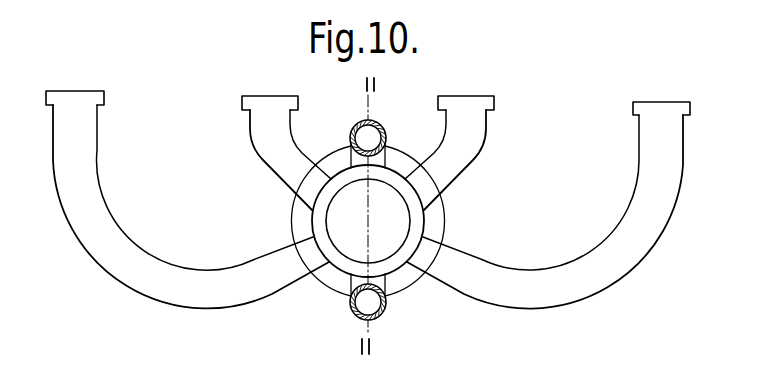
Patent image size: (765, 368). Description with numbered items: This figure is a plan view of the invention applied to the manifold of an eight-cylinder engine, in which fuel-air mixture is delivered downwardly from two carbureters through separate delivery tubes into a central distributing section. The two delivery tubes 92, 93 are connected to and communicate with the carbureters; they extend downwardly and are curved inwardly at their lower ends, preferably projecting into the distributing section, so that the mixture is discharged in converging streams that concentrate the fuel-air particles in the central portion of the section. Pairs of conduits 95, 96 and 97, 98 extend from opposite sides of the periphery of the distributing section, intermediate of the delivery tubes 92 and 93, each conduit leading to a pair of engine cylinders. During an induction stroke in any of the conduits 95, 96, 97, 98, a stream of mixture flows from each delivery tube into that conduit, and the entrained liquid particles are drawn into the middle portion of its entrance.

The delivery tube 92 is at (383, 142).
The delivery tube 93 is at (380, 300).
The conduit 95 is at (510, 300).
The conduit 96 is at (466, 184).
The conduit 97 is at (268, 290).
The conduit 98 is at (268, 175).